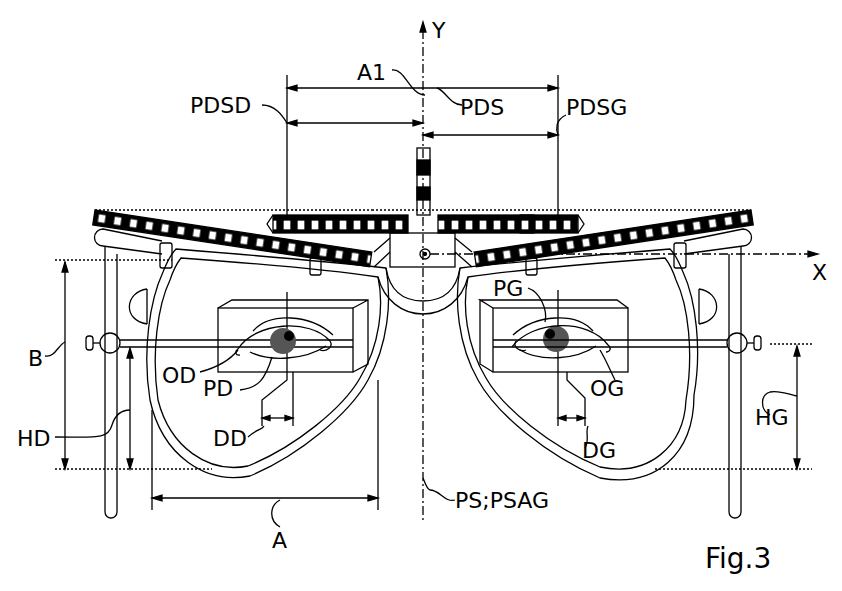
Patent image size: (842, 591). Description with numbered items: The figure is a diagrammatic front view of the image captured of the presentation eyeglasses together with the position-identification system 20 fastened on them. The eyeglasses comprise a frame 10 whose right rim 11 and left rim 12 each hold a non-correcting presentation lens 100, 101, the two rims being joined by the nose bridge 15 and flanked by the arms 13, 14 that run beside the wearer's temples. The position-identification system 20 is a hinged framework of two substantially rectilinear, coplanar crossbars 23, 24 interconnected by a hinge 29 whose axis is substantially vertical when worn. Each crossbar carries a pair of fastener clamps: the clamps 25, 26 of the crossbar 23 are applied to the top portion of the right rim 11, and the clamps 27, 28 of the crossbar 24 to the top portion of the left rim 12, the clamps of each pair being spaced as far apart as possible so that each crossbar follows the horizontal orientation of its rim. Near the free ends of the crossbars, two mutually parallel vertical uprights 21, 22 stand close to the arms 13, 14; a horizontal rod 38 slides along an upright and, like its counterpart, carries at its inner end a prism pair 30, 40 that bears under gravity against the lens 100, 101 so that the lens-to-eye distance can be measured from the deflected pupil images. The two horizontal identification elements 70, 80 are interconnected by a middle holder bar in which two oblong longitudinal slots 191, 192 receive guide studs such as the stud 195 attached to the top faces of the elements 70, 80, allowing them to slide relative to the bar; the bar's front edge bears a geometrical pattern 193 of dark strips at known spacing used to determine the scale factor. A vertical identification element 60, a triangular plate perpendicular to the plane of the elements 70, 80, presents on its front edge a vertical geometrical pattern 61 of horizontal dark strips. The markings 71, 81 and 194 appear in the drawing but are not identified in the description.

The frame 10 is at (373, 387).
The right rim 11 is at (316, 420).
The left rim 12 is at (556, 440).
The arm 13 is at (148, 308).
The arm 14 is at (722, 310).
The nose bridge 15 is at (410, 314).
The position-identification system 20 is at (98, 209).
The upright 21 is at (104, 466).
The upright 22 is at (729, 466).
The crossbar 23 is at (96, 236).
The crossbar 24 is at (752, 236).
The fastener clamp 25 is at (171, 265).
The fastener clamp 26 is at (311, 268).
The fastener clamp 27 is at (537, 268).
The fastener clamp 28 is at (680, 268).
The hinge 29 is at (420, 258).
The prism pair 30 is at (243, 292).
The horizontal rod 38 is at (672, 349).
The prism pair 40 is at (630, 366).
The vertical identification element 60 is at (415, 128).
The geometrical pattern 61 is at (416, 165).
The horizontal identification element 70 is at (165, 202).
The right band reference line 71 is at (198, 212).
The horizontal identification element 80 is at (672, 221).
The left band reference line 81 is at (726, 214).
The presentation lens 100 is at (206, 479).
The presentation lens 101 is at (513, 420).
The slot 191 is at (368, 214).
The slot 192 is at (462, 214).
The geometrical pattern 193 is at (580, 215).
The central band right end 194 is at (310, 214).
The guide stud 195 is at (538, 214).